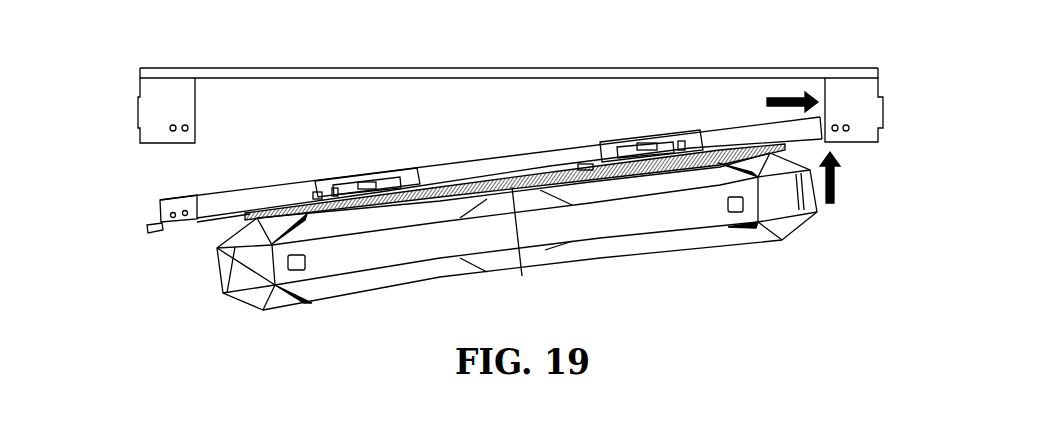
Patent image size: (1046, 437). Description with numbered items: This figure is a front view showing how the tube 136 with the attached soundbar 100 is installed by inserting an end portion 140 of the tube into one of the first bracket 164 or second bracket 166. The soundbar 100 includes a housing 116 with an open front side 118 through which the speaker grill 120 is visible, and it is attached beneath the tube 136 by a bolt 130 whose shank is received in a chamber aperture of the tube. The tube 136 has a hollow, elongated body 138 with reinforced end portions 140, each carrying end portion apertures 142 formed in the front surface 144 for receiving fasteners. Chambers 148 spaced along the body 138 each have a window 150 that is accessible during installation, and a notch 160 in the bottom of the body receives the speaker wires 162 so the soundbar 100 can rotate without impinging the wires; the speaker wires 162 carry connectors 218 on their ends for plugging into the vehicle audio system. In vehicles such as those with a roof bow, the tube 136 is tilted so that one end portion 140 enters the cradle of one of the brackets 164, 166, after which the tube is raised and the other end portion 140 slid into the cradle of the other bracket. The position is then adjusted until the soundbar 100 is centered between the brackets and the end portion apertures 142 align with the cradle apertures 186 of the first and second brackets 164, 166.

The soundbar 100 is at (757, 257).
The housing 116 is at (253, 304).
The open front side 118 is at (220, 295).
The speaker grill 120 is at (395, 252).
The bolt 130 is at (369, 182).
The tube 136 is at (256, 188).
The body 138 is at (457, 172).
The end portion 140 is at (177, 200).
The end portion aperture 142 is at (165, 217).
The front surface 144 is at (567, 163).
The chamber 148 is at (348, 173).
The window 150 is at (317, 181).
The notch 160 is at (585, 172).
The speaker wires 162 is at (213, 223).
The first bracket 164 is at (118, 105).
The second bracket 166 is at (896, 85).
The cradle aperture 186 is at (184, 124).
The connector 218 is at (147, 232).